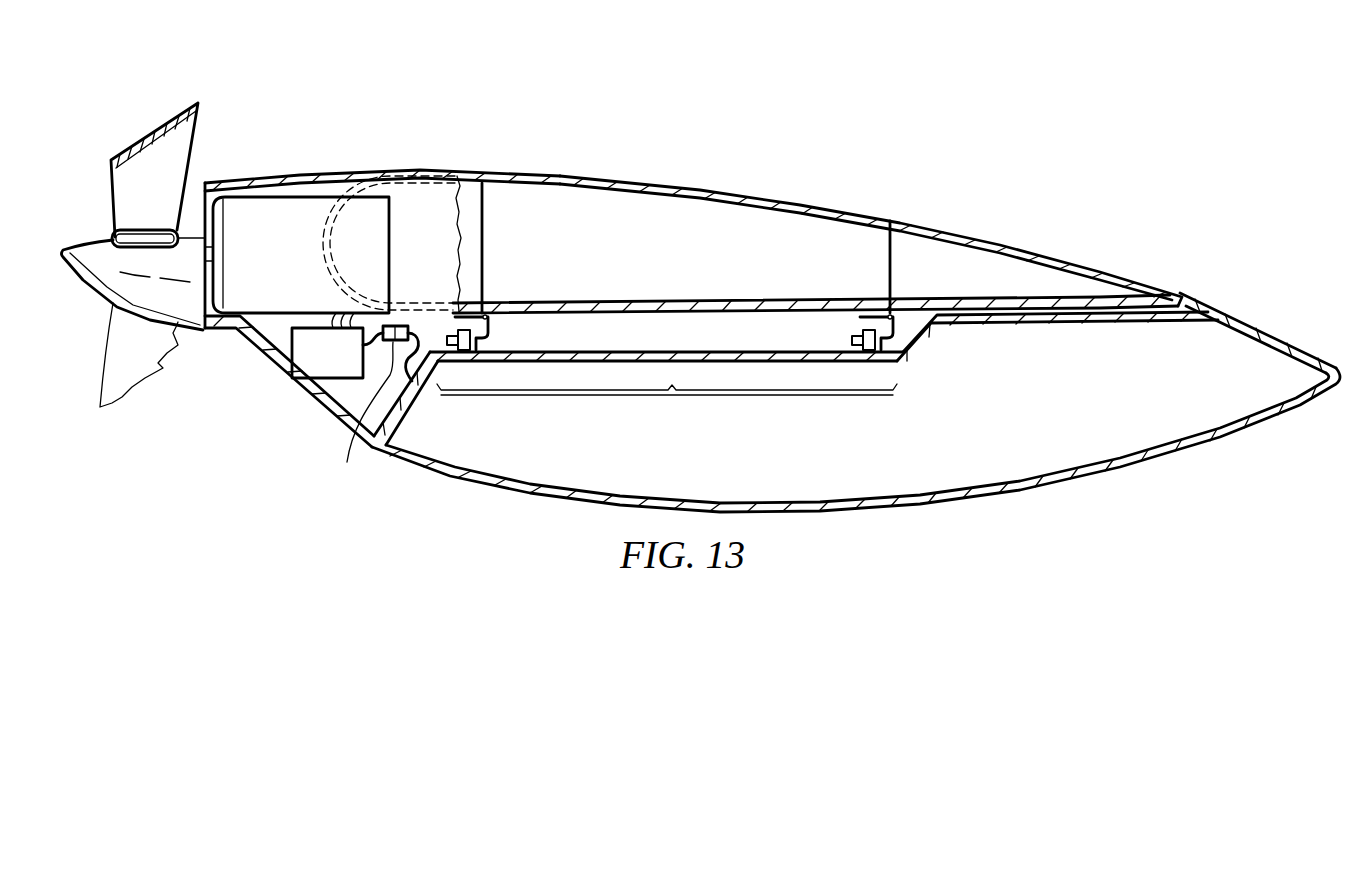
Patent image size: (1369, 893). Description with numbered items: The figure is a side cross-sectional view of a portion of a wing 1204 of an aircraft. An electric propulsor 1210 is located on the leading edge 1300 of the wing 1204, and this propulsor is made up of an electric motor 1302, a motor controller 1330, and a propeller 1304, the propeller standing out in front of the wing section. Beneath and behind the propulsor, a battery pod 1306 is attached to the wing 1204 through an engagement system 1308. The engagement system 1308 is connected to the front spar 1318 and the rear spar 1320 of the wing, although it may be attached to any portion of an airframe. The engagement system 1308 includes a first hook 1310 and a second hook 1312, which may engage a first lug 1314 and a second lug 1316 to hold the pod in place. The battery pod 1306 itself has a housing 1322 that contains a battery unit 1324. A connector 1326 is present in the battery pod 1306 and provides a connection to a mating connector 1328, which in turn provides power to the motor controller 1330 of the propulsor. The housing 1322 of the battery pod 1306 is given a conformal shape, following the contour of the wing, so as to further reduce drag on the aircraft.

The wing 1204 is at (851, 206).
The electric propulsor 1210 is at (281, 163).
The leading edge 1300 is at (332, 208).
The electric motor 1302 is at (296, 263).
The propeller 1304 is at (128, 138).
The battery pod 1306 is at (1250, 310).
The engagement system 1308 is at (667, 408).
The hook 1310 is at (483, 316).
The hook 1312 is at (853, 342).
The lug 1314 is at (465, 362).
The lug 1316 is at (866, 358).
The front spar 1318 is at (483, 236).
The rear spar 1320 is at (892, 270).
The housing 1322 is at (1167, 458).
The battery unit 1324 is at (826, 461).
The connector 1326 is at (404, 325).
The connector 1328 is at (358, 415).
The motor controller 1330 is at (292, 352).